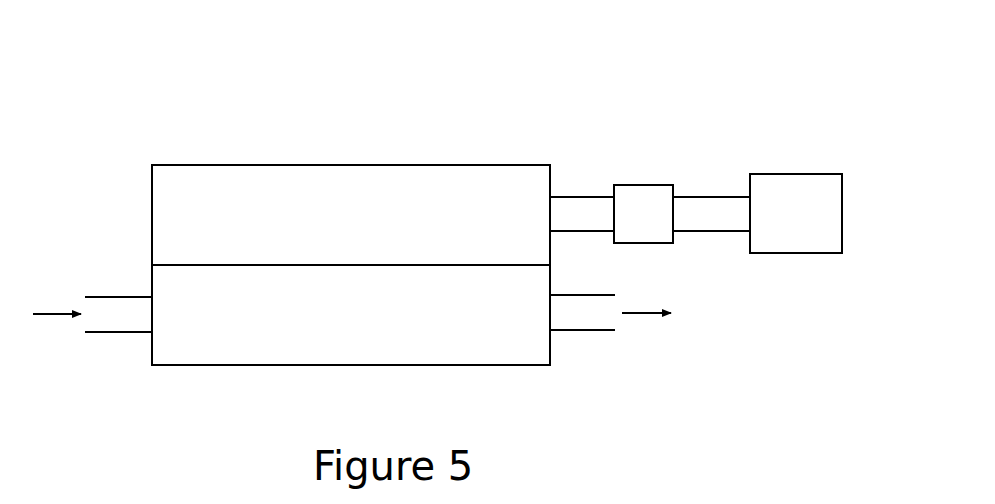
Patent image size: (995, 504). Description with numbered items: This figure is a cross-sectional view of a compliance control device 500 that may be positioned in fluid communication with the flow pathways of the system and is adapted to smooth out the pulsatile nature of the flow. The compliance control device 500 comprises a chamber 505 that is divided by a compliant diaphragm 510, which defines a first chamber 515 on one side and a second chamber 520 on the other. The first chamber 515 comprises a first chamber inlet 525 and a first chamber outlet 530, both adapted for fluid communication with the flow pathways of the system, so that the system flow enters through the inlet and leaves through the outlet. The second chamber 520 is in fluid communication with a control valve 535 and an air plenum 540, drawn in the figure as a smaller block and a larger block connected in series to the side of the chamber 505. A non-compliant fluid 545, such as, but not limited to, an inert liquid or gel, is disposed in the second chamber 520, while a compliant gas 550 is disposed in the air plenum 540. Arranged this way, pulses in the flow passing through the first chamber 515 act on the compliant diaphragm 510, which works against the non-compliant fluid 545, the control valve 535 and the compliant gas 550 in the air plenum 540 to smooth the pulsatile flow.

The compliance control device 500 is at (183, 63).
The chamber 505 is at (252, 165).
The compliant diaphragm 510 is at (428, 263).
The first chamber 515 is at (357, 231).
The second chamber 520 is at (377, 328).
The first chamber inlet 525 is at (92, 302).
The first chamber outlet 530 is at (610, 329).
The control valve 535 is at (643, 214).
The air plenum 540 is at (820, 173).
The non-compliant fluid 545 is at (475, 173).
The compliant gas 550 is at (817, 237).